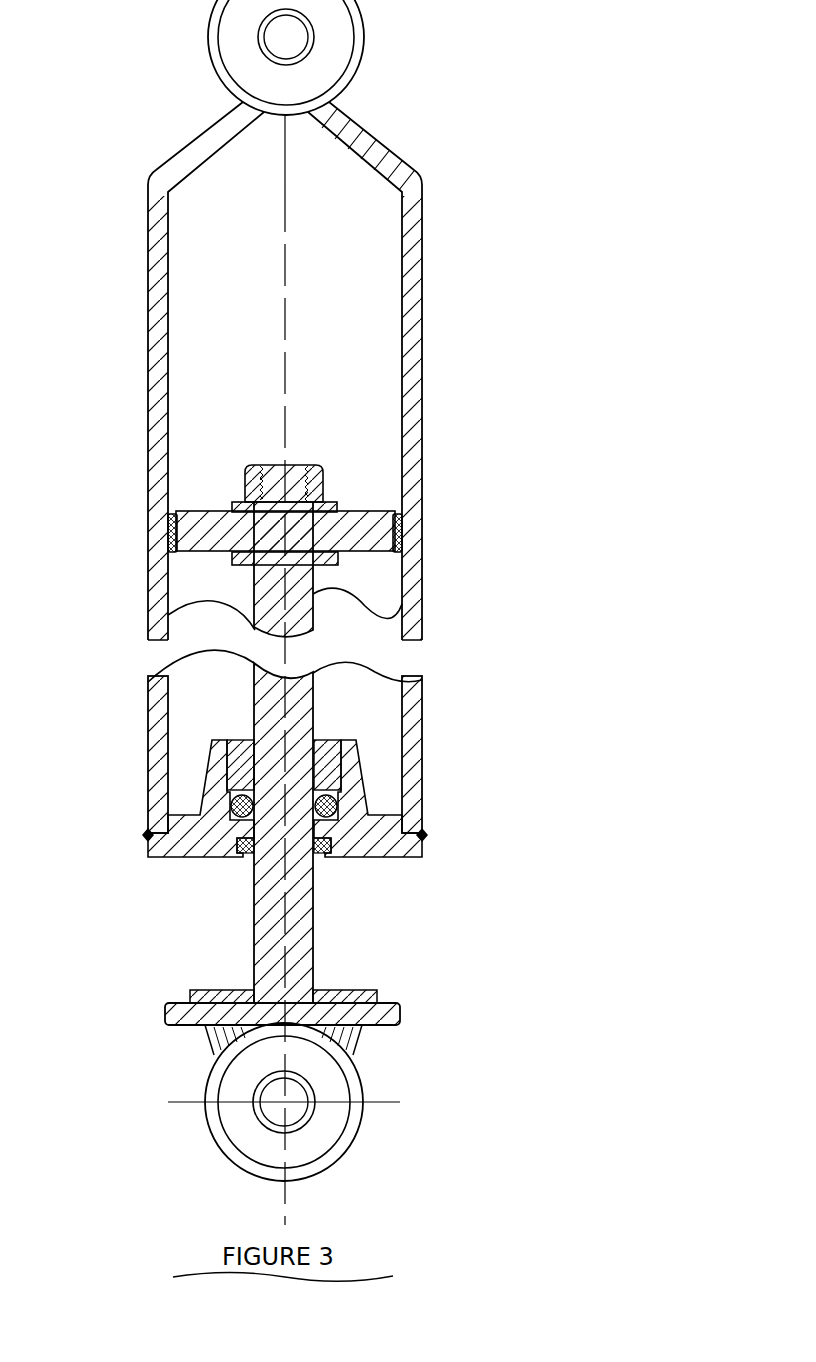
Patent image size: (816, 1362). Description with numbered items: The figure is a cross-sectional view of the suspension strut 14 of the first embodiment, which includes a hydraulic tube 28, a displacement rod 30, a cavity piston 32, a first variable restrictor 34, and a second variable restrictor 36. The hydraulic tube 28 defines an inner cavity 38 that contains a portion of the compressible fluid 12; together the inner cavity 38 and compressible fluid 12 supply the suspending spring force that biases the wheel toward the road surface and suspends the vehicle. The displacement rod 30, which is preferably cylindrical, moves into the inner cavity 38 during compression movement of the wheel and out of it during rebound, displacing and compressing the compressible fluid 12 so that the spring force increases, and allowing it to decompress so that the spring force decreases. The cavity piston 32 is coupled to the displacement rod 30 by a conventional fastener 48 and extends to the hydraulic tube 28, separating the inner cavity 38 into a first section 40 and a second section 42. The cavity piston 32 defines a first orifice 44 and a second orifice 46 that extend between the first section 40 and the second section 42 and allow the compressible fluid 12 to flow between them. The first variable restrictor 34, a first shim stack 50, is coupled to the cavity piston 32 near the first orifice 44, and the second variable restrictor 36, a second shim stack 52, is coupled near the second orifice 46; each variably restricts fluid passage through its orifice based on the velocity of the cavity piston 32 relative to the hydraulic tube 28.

The compressible fluid 12 is at (358, 360).
The suspension strut 14 is at (457, 251).
The hydraulic tube 28 is at (422, 389).
The displacement rod 30 is at (395, 612).
The cavity piston 32 is at (388, 570).
The first variable restrictor 34 is at (286, 507).
The second variable restrictor 36 is at (190, 560).
The inner cavity 38 is at (388, 302).
The first section 40 is at (181, 367).
The second section 42 is at (160, 612).
The first orifice 44 is at (400, 512).
The second orifice 46 is at (170, 537).
The fastener 48 is at (316, 465).
The first shim stack 50 is at (236, 500).
The second shim stack 52 is at (235, 566).